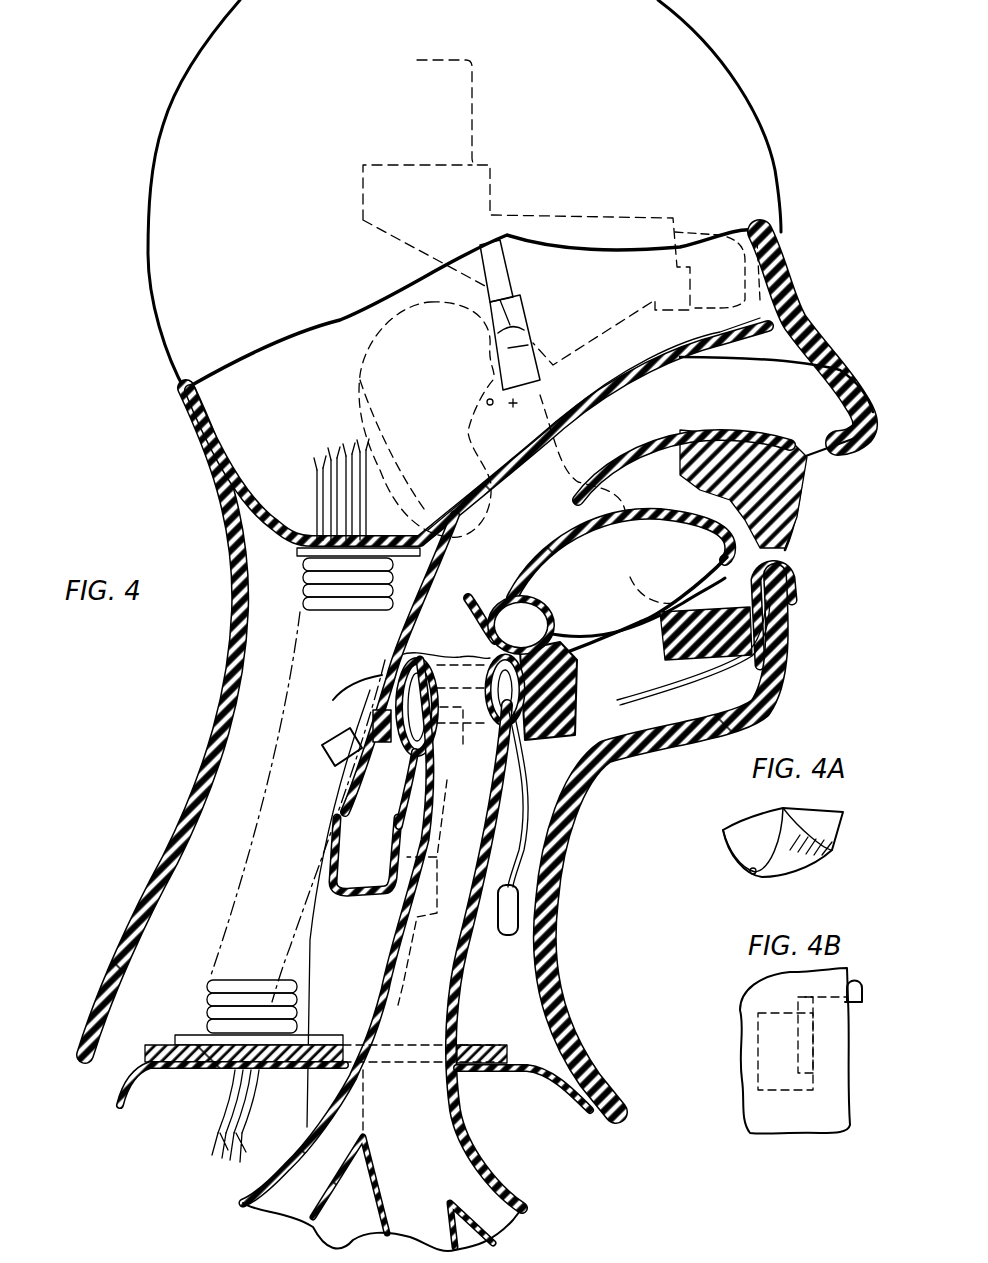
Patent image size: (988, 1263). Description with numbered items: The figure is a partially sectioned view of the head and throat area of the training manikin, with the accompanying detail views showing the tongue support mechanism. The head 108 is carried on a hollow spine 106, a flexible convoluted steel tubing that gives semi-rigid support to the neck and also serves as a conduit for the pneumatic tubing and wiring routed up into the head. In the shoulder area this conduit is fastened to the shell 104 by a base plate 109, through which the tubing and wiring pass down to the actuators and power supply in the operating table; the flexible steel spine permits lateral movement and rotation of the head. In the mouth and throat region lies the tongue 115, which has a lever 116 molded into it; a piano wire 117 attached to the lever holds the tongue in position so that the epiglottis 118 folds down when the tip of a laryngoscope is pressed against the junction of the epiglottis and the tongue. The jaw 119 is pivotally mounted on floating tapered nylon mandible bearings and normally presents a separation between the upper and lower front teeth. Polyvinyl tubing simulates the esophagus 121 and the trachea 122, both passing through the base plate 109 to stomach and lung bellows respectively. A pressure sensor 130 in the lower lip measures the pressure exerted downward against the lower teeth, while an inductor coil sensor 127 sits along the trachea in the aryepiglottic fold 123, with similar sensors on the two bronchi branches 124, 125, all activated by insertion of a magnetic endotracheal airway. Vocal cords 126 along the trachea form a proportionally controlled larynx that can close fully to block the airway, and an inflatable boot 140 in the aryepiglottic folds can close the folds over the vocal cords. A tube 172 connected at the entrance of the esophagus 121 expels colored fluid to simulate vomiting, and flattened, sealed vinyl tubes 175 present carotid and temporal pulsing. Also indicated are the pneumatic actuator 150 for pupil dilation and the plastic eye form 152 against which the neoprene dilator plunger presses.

In FIG. 4, the shell 104 is at (113, 1093).
In FIG. 4, the hollow spine 106 is at (207, 999).
In FIG. 4, the head 108 is at (197, 494).
In FIG. 4, the base plate 109 is at (148, 1046).
In FIG. 4, the tongue 115 is at (672, 527).
In FIG. 4B, the tongue 115 is at (753, 1107).
In FIG. 4, the lever 116 is at (470, 623).
In FIG. 4A, the lever 116 is at (843, 822).
In FIG. 4B, the lever 116 is at (757, 1035).
In FIG. 4B, the piano wire 117 is at (865, 983).
In FIG. 4, the epiglottis 118 is at (470, 607).
In FIG. 4, the jaw 119 is at (645, 642).
In FIG. 4, the esophagus 121 is at (318, 957).
In FIG. 4, the trachea 122 is at (467, 963).
In FIG. 4, the aryepiglottic fold 123 is at (413, 660).
In FIG. 4, the bronchi branch 124 is at (260, 1190).
In FIG. 4, the bronchi branch 125 is at (493, 1178).
In FIG. 4, the vocal cords 126 is at (430, 762).
In FIG. 4, the sensor 127 is at (393, 672).
In FIG. 4, the pressure sensor 130 is at (793, 578).
In FIG. 4, the inflatable boot 140 is at (527, 693).
In FIG. 4, the pneumatic actuator 150 is at (473, 110).
In FIG. 4, the plastic eye form 152 is at (737, 310).
In FIG. 4, the tube 172 is at (338, 742).
In FIG. 4, the sealed vinyl tubes 175 is at (533, 331).